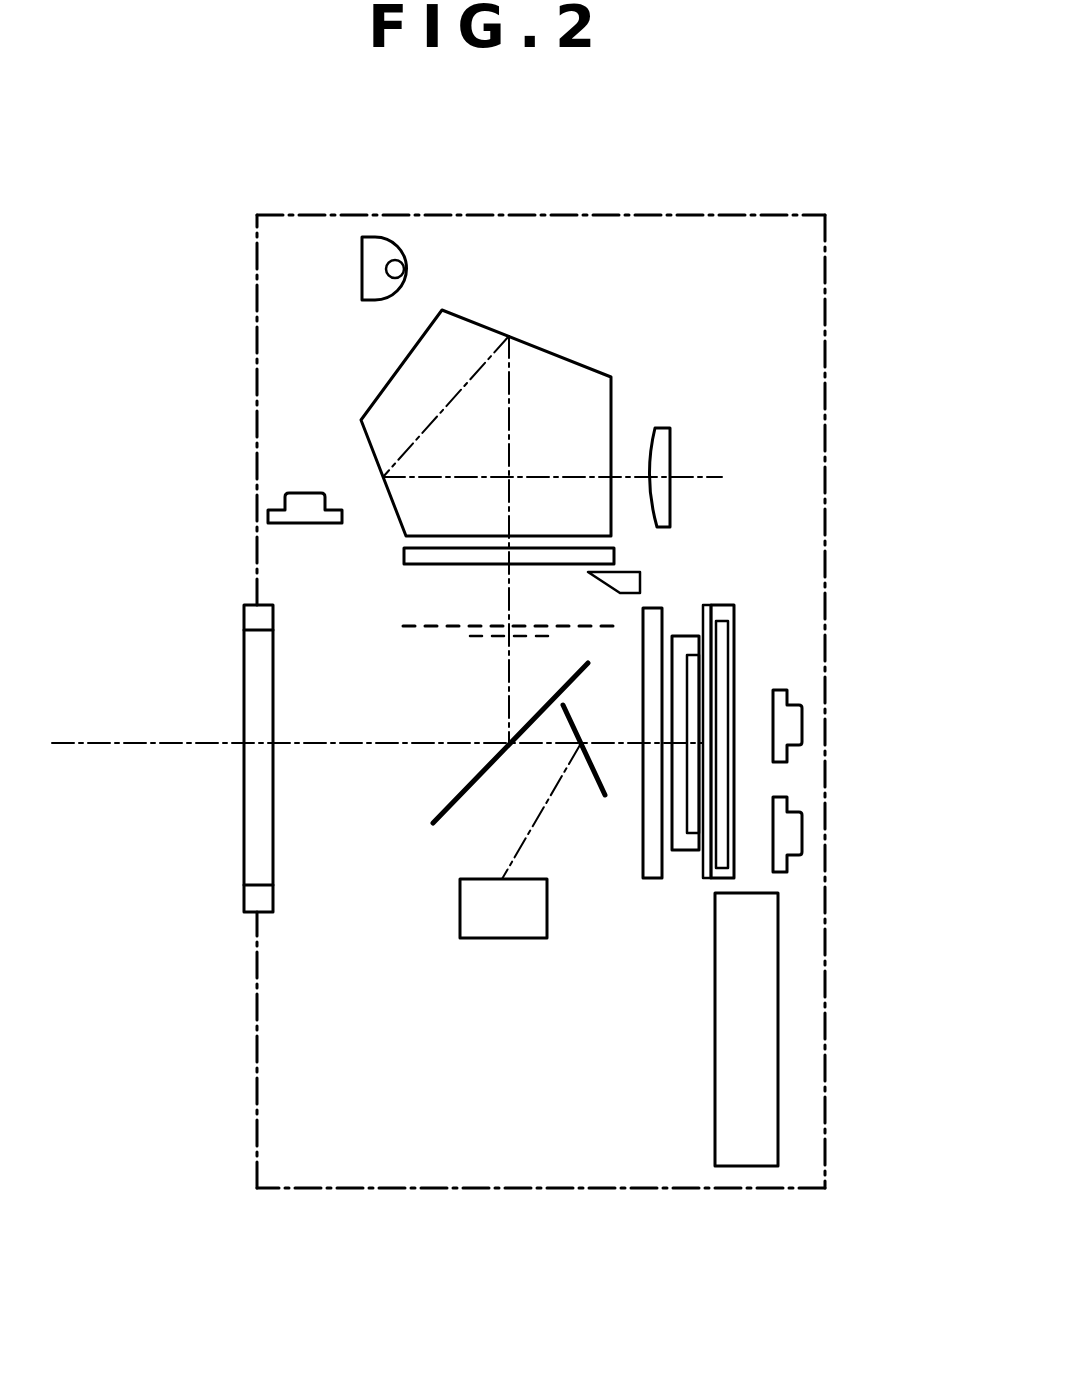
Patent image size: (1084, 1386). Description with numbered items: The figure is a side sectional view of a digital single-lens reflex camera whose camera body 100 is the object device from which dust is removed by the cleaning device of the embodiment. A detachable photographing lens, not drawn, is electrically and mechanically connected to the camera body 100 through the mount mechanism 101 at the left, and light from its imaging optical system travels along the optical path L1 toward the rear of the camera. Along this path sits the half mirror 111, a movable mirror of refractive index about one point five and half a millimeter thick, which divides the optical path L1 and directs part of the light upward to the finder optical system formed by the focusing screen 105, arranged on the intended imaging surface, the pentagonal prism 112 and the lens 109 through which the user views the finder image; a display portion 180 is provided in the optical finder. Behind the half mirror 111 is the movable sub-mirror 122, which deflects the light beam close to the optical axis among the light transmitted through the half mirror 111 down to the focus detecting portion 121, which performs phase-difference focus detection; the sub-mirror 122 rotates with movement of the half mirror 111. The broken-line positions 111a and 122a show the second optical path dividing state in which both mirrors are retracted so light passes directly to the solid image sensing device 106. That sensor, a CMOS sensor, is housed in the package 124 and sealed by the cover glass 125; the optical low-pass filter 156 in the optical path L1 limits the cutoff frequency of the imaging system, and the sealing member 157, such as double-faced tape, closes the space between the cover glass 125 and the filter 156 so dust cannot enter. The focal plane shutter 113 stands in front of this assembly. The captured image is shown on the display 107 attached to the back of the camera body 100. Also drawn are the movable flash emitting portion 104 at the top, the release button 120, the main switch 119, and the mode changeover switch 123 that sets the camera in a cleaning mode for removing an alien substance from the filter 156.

The camera body 100 is at (545, 1190).
The mount mechanism 101 is at (253, 899).
The movable flash emitting portion 104 is at (362, 270).
The focusing screen 105 is at (403, 554).
The solid image sensing device 106 is at (725, 640).
The display 107 is at (715, 1108).
The lens 109 is at (662, 427).
The half mirror 111 is at (435, 823).
The retracted position of half mirror 111a is at (452, 622).
The pentagonal prism 112 is at (570, 368).
The focal plane shutter 113 is at (645, 806).
The main switch 119 is at (802, 833).
The release button 120 is at (278, 497).
The focus detecting portion 121 is at (500, 938).
The sub-mirror 122 is at (607, 709).
The retracted position of sub-mirror 122a is at (470, 637).
The mode changeover switch 123 is at (802, 722).
The package 124 is at (725, 610).
The cover glass 125 is at (706, 605).
The optical low-pass filter 156 is at (680, 850).
The sealing member 157 is at (694, 850).
The display portion in the optical finder 180 is at (640, 578).
The optical path L1 is at (135, 737).